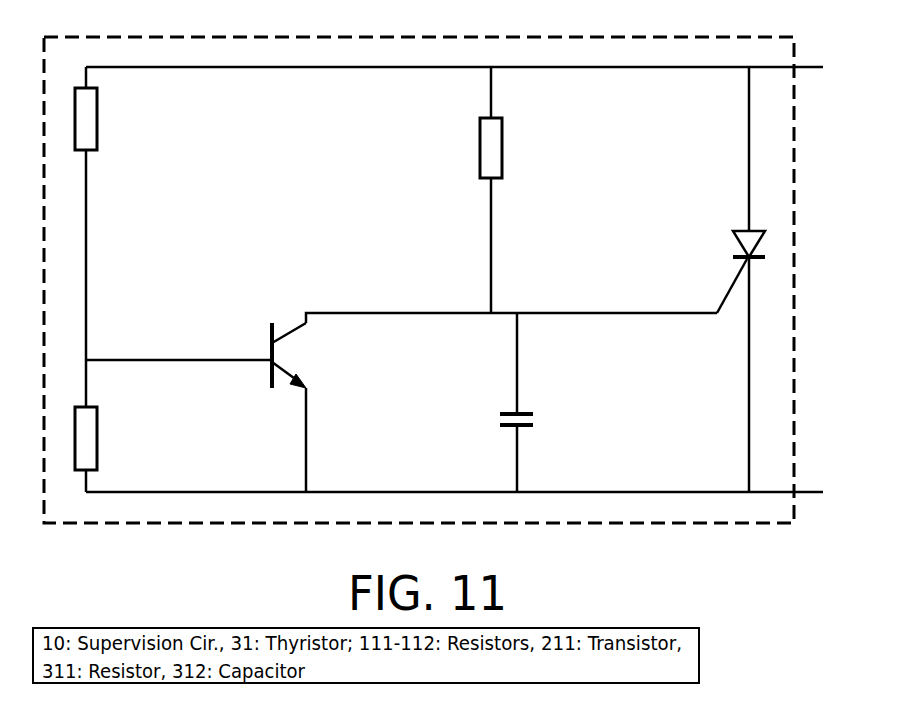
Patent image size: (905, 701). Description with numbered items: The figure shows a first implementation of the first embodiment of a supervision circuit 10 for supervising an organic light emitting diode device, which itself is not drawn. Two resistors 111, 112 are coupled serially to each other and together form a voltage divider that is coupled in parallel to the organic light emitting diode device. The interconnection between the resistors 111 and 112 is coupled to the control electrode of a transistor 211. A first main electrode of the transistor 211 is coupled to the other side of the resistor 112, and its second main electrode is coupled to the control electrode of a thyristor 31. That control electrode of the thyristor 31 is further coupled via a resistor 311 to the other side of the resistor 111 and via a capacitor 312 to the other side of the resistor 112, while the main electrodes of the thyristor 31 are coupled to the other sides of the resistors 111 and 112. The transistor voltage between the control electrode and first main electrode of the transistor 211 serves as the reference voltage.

The supervision circuit 10 is at (716, 524).
The thyristor 31 is at (736, 250).
The resistor 111 is at (97, 118).
The resistor 112 is at (97, 432).
The transistor 211 is at (292, 352).
The resistor 311 is at (502, 148).
The capacitor 312 is at (533, 420).